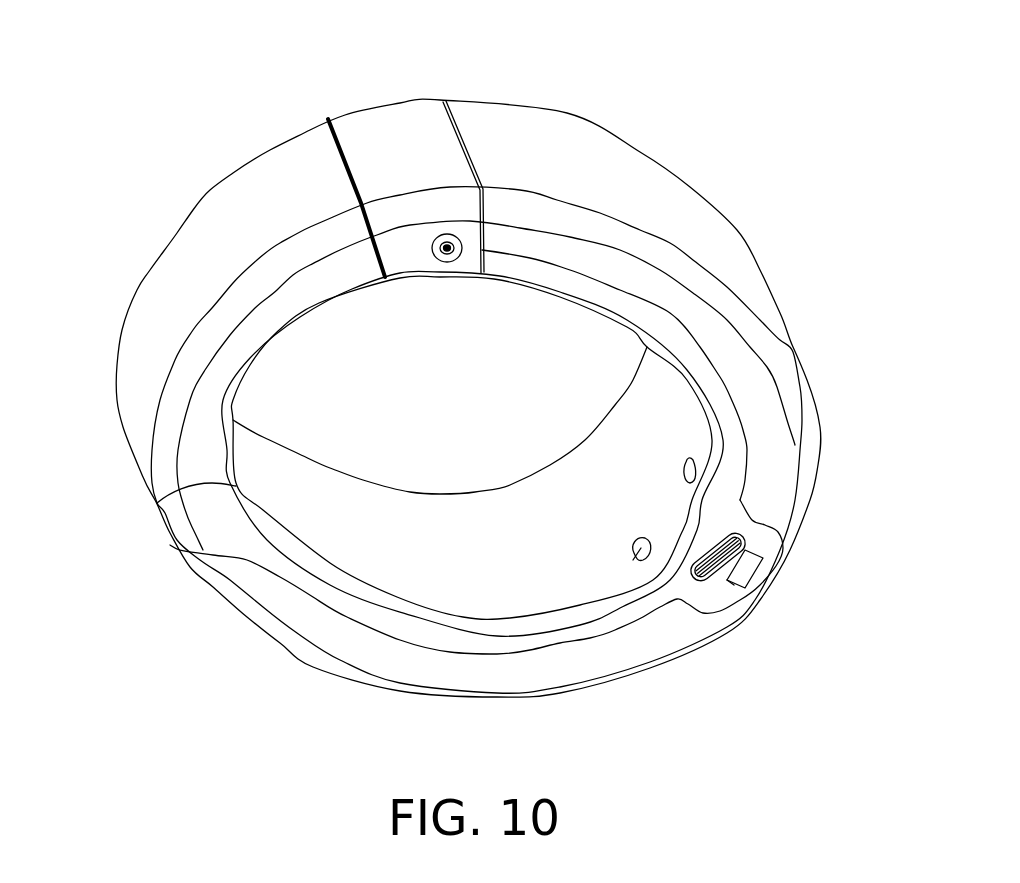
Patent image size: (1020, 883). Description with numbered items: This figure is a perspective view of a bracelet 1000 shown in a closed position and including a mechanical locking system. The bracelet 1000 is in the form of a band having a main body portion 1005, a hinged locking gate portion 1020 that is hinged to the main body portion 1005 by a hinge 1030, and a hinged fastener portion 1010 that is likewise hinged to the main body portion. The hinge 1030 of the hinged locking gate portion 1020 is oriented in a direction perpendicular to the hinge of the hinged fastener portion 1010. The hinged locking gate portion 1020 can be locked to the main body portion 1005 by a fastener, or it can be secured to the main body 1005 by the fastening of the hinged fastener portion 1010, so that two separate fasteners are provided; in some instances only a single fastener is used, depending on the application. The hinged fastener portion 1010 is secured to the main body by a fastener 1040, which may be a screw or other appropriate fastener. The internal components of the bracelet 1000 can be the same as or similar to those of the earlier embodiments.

The bracelet 1000 is at (254, 82).
The main body portion 1005 is at (595, 158).
The hinged fastener portion 1010 is at (407, 125).
The hinged locking gate portion 1020 is at (168, 300).
The hinge 1030 is at (157, 503).
The fastener 1040 is at (443, 262).